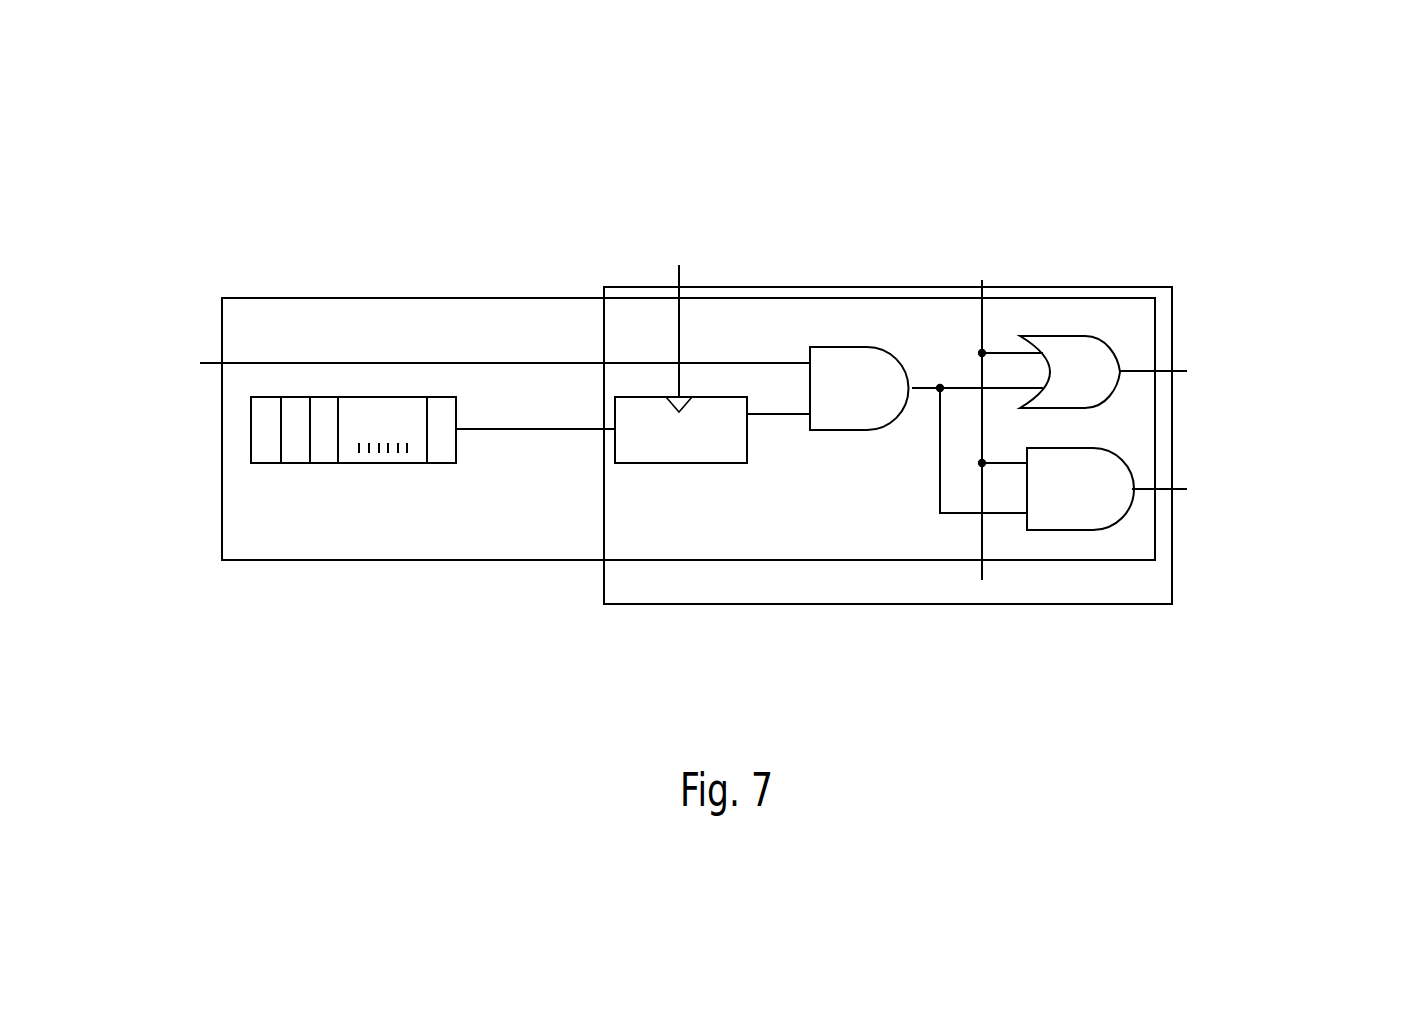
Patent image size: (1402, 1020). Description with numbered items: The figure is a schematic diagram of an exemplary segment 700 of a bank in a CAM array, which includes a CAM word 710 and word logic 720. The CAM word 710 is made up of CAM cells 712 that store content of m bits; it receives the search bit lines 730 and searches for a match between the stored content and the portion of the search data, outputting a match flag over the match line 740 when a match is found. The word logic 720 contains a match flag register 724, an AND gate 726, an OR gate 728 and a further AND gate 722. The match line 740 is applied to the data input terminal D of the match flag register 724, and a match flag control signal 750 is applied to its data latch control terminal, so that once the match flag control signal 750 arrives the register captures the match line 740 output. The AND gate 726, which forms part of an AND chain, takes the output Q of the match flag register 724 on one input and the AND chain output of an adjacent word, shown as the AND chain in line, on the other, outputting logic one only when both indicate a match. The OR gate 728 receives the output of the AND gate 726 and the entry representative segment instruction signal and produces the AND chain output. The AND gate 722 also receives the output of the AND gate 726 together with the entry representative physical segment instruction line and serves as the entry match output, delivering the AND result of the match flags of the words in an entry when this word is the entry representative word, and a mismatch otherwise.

The segment 700 is at (524, 150).
The CAM word 710 is at (338, 463).
The CAM cells 712 is at (264, 397).
The search bit lines 730 is at (320, 397).
The match line 740 is at (530, 429).
The match flag control signal 750 is at (677, 286).
The match flag register 724 is at (710, 463).
The AND gate 726 is at (853, 430).
The word logic 720 is at (1163, 604).
The OR gate 728 is at (1075, 336).
The AND gate 722 is at (1066, 530).